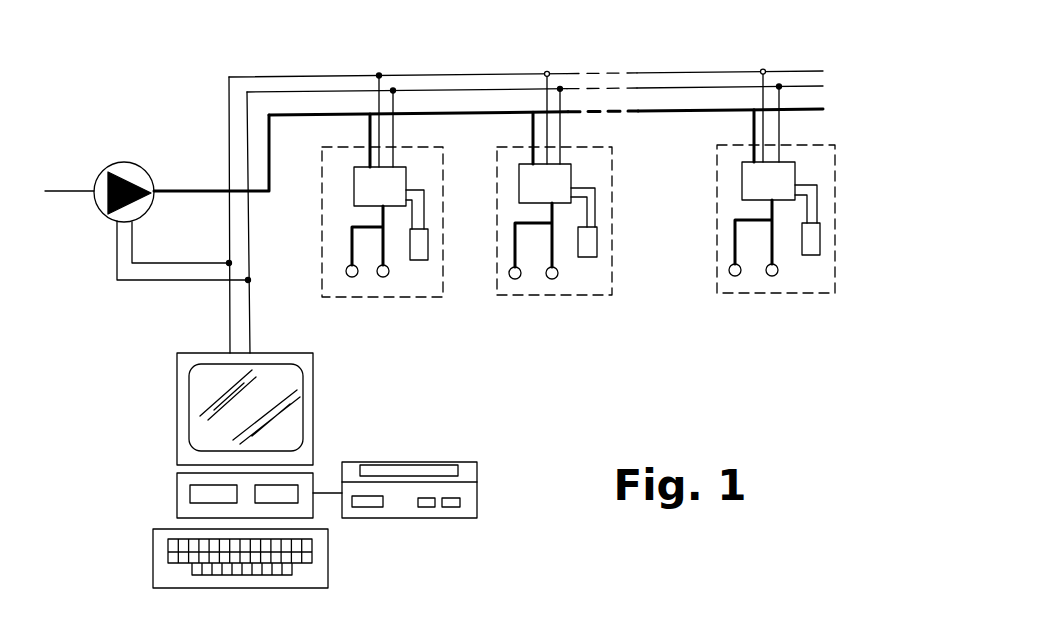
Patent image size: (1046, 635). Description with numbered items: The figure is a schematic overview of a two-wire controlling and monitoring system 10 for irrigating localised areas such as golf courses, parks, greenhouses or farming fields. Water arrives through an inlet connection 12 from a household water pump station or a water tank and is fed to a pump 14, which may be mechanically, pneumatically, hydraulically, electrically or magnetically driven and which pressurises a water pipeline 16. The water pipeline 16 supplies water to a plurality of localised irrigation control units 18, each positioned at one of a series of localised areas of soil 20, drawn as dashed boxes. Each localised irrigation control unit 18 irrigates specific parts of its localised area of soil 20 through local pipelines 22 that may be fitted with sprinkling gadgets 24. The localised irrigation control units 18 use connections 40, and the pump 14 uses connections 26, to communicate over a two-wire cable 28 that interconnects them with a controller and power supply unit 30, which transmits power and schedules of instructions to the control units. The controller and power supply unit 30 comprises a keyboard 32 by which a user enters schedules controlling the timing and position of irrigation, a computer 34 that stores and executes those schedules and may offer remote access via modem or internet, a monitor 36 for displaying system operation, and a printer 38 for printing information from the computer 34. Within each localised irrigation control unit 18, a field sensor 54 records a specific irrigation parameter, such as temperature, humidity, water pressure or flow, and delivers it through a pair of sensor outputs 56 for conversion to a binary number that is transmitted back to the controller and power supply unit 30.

The two-wire controlling and monitoring system 10 is at (580, 56).
The inlet connection 12 is at (72, 188).
The pump 14 is at (128, 162).
The water pipeline 16 is at (200, 188).
The localised irrigation control unit 18 is at (354, 190).
The localised area of soil 20 is at (399, 297).
The local pipeline 22 is at (352, 250).
The sprinkling gadget 24 is at (352, 277).
The connections 26 is at (167, 265).
The two-wire cable 28 is at (232, 308).
The controller and power supply unit 30 is at (244, 470).
The keyboard 32 is at (328, 558).
The computer 34 is at (317, 477).
The monitor 36 is at (315, 397).
The printer 38 is at (478, 488).
The connections 40 is at (387, 107).
The field sensor 54 is at (432, 253).
The sensor outputs 56 is at (595, 200).